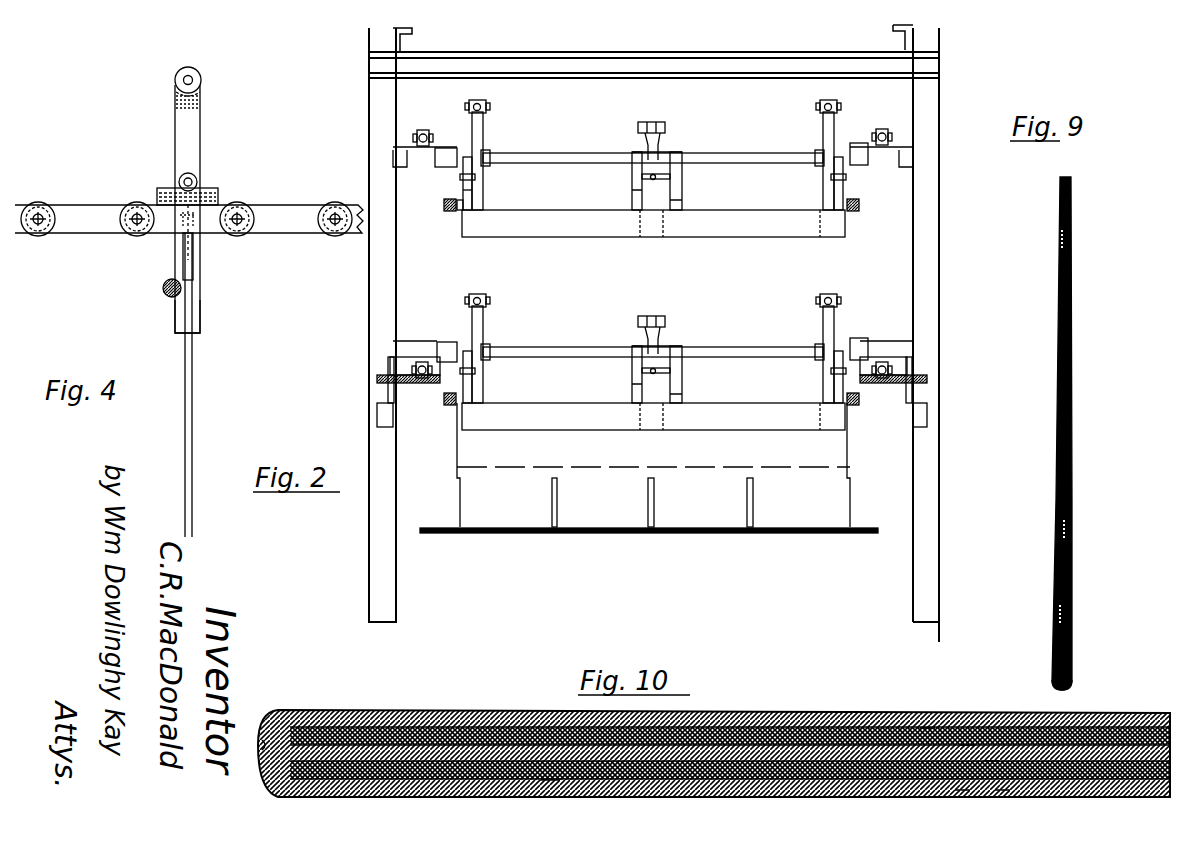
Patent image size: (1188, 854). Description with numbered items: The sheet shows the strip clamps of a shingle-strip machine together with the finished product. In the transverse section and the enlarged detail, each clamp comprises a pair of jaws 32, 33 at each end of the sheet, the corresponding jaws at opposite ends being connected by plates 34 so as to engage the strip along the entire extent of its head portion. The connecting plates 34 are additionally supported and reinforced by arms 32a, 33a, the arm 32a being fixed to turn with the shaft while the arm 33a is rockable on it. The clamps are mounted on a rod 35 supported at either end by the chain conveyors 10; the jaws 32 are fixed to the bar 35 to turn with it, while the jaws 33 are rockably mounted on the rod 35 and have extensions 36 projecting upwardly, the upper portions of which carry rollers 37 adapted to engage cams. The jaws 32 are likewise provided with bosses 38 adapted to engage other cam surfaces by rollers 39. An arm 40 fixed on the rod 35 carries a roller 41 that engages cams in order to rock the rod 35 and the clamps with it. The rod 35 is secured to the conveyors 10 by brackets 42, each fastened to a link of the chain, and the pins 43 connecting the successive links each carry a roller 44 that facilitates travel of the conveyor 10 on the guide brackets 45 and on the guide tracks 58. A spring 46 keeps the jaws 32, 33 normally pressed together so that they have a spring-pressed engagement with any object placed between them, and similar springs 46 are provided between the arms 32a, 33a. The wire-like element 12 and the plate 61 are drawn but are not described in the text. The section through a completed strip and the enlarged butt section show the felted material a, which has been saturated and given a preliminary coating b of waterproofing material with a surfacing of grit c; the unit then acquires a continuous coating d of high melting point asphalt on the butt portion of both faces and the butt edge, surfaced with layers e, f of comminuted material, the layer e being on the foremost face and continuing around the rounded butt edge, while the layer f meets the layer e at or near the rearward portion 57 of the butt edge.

In FIG. 4, the conveyor 10 is at (273, 213).
In FIG. 2, the conveyor 10 is at (421, 134).
In FIG. 4, the wire rod 12 is at (193, 401).
In FIG. 9, the wire rod 12 is at (1071, 351).
In FIG. 4, the jaw 32 is at (178, 322).
In FIG. 2, the jaw 32 is at (463, 192).
In FIG. 2, the arm 32a is at (620, 391).
In FIG. 4, the jaw 33 is at (194, 318).
In FIG. 2, the jaw 33 is at (478, 196).
In FIG. 2, the arm 33a is at (684, 201).
In FIG. 2, the plate 34 is at (577, 226).
In FIG. 4, the rod 35 is at (198, 182).
In FIG. 2, the rod 35 is at (565, 158).
In FIG. 4, the extension 36 is at (200, 131).
In FIG. 2, the extension 36 is at (484, 140).
In FIG. 4, the roller 37 is at (201, 80).
In FIG. 2, the roller 37 is at (481, 103).
In FIG. 2, the boss 38 is at (458, 213).
In FIG. 4, the roller 39 is at (164, 291).
In FIG. 2, the roller 39 is at (446, 212).
In FIG. 2, the arm 40 is at (664, 148).
In FIG. 2, the roller 41 is at (657, 122).
In FIG. 2, the bracket 42 is at (430, 136).
In FIG. 4, the pin 43 is at (133, 233).
In FIG. 4, the roller 44 is at (132, 205).
In FIG. 2, the roller 44 is at (424, 128).
In FIG. 2, the guide bracket 45 is at (408, 158).
In FIG. 4, the spring 46 is at (194, 246).
In FIG. 2, the spring 46 is at (458, 172).
In FIG. 9, the rearward portion of the butt edge 57 is at (1068, 690).
In FIG. 10, the rearward portion of the butt edge 57 is at (262, 781).
In FIG. 2, the guide track 58 is at (431, 385).
In FIG. 2, the bottom plate 61 is at (862, 528).
In FIG. 10, the felted material a is at (962, 794).
In FIG. 10, the preliminary coating b is at (992, 716).
In FIG. 9, the grit surfacing c is at (1061, 241).
In FIG. 10, the grit surfacing c is at (964, 716).
In FIG. 10, the coating d is at (925, 716).
In FIG. 9, the layer e is at (1058, 616).
In FIG. 10, the layer e is at (284, 712).
In FIG. 9, the layer f is at (1068, 529).
In FIG. 10, the layer f is at (550, 793).